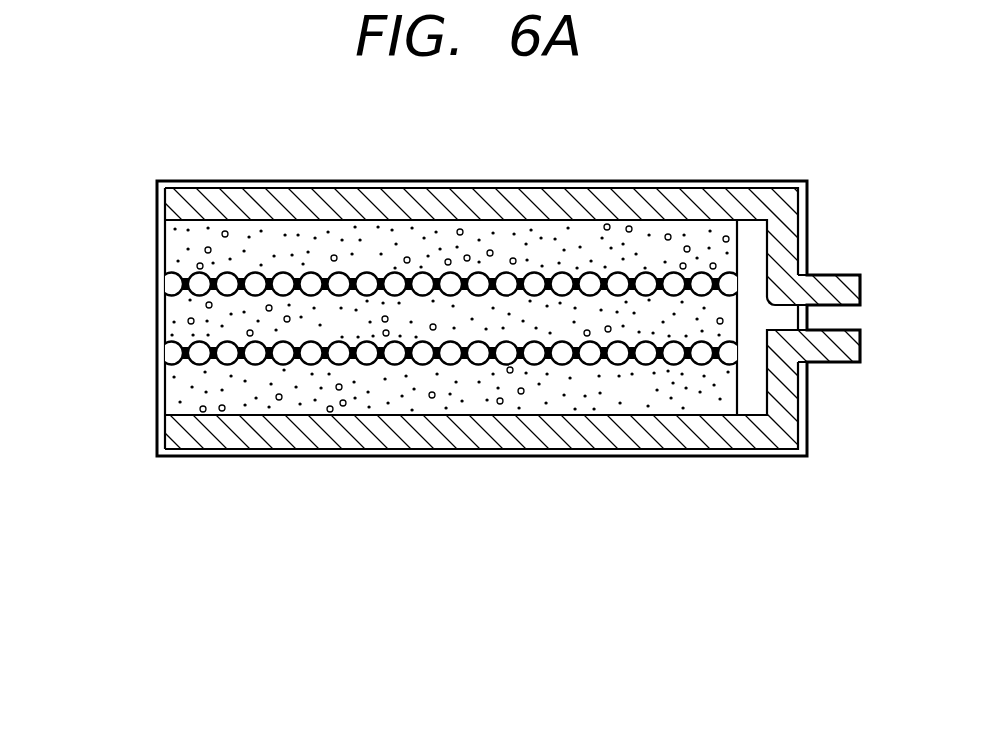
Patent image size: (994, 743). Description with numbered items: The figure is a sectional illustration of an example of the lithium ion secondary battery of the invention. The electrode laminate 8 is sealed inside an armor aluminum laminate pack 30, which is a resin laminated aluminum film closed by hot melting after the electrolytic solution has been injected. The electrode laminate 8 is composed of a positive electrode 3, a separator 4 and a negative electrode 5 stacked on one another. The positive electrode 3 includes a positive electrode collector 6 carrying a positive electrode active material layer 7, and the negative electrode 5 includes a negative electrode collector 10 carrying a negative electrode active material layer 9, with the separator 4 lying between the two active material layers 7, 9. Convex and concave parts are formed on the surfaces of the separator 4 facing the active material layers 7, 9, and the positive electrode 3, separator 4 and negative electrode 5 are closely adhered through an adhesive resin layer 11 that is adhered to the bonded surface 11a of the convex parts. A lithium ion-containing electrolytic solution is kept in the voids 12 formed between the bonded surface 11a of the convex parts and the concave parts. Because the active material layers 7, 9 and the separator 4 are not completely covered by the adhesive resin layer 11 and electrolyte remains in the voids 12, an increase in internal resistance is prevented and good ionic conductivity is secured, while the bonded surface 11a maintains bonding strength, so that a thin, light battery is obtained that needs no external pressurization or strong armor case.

The positive electrode 3 is at (147, 283).
The separator 4 is at (167, 326).
The negative electrode 5 is at (147, 448).
The positive electrode collector 6 is at (833, 285).
The positive electrode active material layer 7 is at (412, 235).
The electrode laminate 8 is at (70, 412).
The negative electrode active material layer 9 is at (460, 398).
The negative electrode collector 10 is at (830, 350).
The adhesive resin layer 11 is at (612, 277).
The bonded surface 11a is at (524, 274).
The void 12 is at (704, 280).
The armor aluminum laminate pack 30 is at (768, 182).